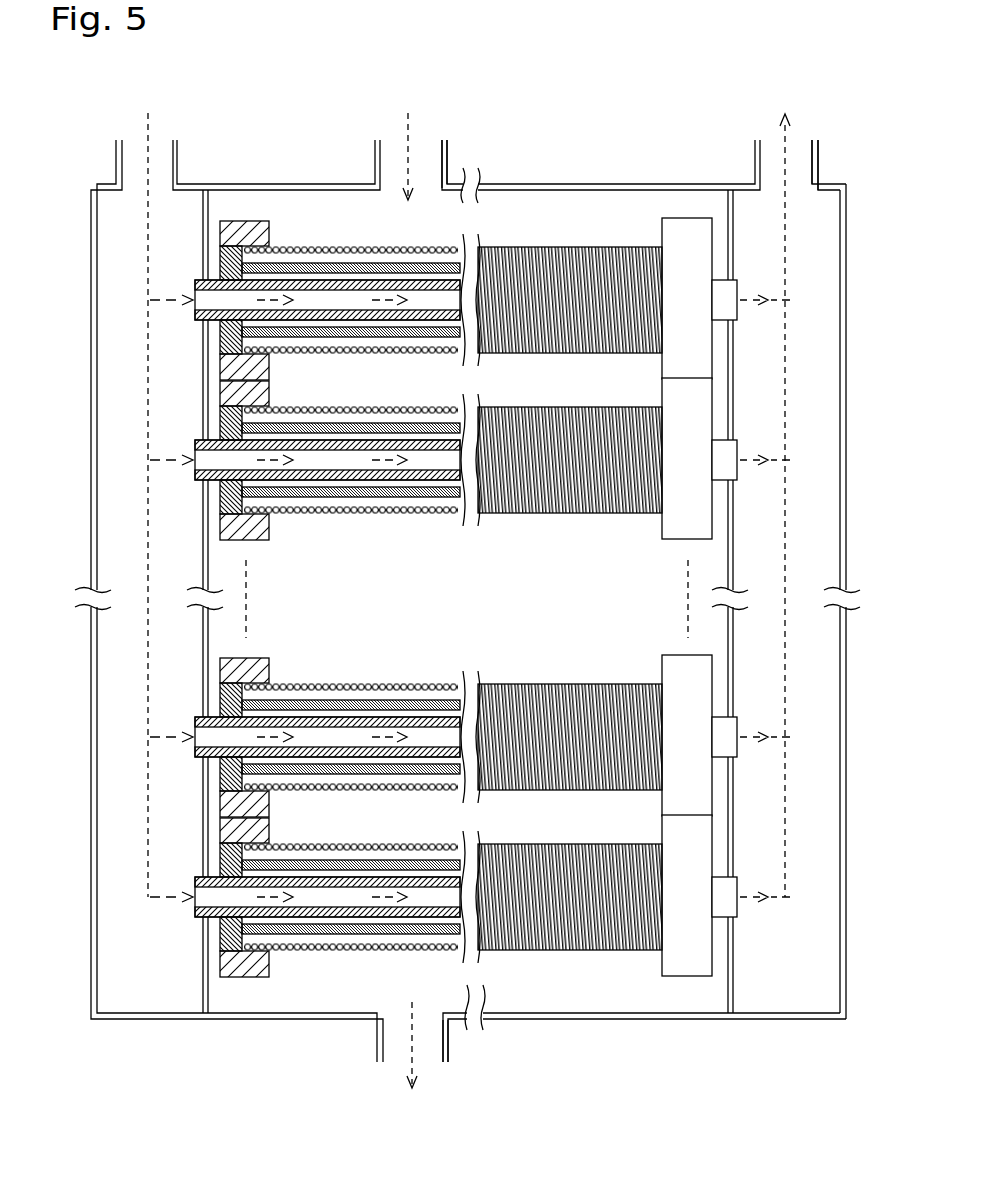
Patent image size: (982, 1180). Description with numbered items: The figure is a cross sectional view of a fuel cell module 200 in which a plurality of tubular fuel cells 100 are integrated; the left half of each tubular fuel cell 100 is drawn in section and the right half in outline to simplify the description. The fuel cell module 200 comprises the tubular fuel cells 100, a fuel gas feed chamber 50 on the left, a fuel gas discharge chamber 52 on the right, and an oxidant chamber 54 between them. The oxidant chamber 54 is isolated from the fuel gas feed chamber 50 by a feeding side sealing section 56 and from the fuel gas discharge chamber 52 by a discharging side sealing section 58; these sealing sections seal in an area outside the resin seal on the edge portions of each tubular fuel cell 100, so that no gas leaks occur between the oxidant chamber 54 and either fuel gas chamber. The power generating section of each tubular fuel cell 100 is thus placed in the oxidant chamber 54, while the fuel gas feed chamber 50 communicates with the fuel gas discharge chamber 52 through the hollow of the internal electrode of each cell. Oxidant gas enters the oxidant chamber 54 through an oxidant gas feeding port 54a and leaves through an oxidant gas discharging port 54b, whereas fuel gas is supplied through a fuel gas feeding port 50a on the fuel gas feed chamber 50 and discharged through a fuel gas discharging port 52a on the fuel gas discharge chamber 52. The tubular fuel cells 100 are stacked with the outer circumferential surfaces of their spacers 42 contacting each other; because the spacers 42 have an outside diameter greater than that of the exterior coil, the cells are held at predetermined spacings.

The spacer 42 is at (269, 230).
The fuel gas feed chamber 50 is at (110, 260).
The fuel gas feeding port 50a is at (168, 164).
The fuel gas discharge chamber 52 is at (834, 252).
The fuel gas discharging port 52a is at (812, 155).
The oxidant chamber 54 is at (578, 190).
The oxidant gas feeding port 54a is at (437, 153).
The oxidant gas discharging port 54b is at (384, 1034).
The feeding side sealing section 56 is at (204, 388).
The discharging side sealing section 58 is at (733, 385).
The tubular fuel cell 100 is at (500, 246).
The fuel cell module 200 is at (477, 603).